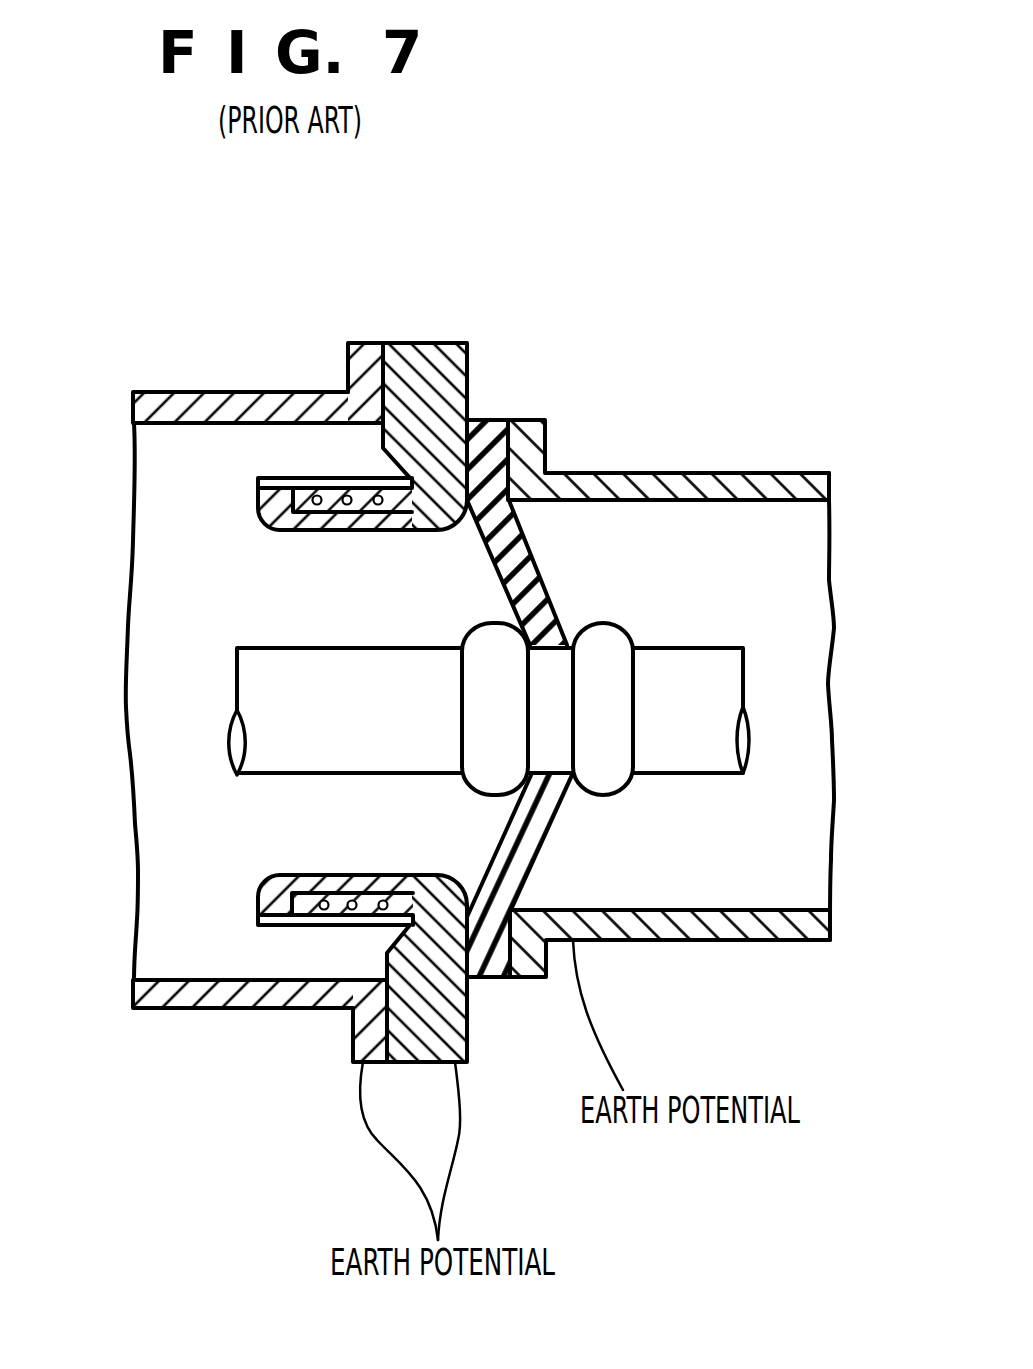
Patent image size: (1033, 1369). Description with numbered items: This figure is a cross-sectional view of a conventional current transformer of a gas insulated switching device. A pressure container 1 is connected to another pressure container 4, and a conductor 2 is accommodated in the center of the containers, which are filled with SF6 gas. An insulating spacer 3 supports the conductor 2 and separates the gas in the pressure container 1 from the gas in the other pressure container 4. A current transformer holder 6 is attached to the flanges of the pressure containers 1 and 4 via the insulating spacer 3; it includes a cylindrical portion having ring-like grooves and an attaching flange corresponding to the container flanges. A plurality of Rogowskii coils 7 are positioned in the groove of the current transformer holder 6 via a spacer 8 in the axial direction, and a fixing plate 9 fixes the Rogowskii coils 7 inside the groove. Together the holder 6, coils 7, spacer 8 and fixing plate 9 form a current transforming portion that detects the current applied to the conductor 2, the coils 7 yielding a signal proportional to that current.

The pressure container 1 is at (150, 406).
The conductor 2 is at (282, 750).
The insulating spacer 3 is at (488, 432).
The pressure container 4 is at (708, 490).
The current transformer holder 6 is at (426, 385).
The Rogowskii coils 7 is at (317, 503).
The spacer 8 is at (317, 702).
The fixing plate 9 is at (272, 478).